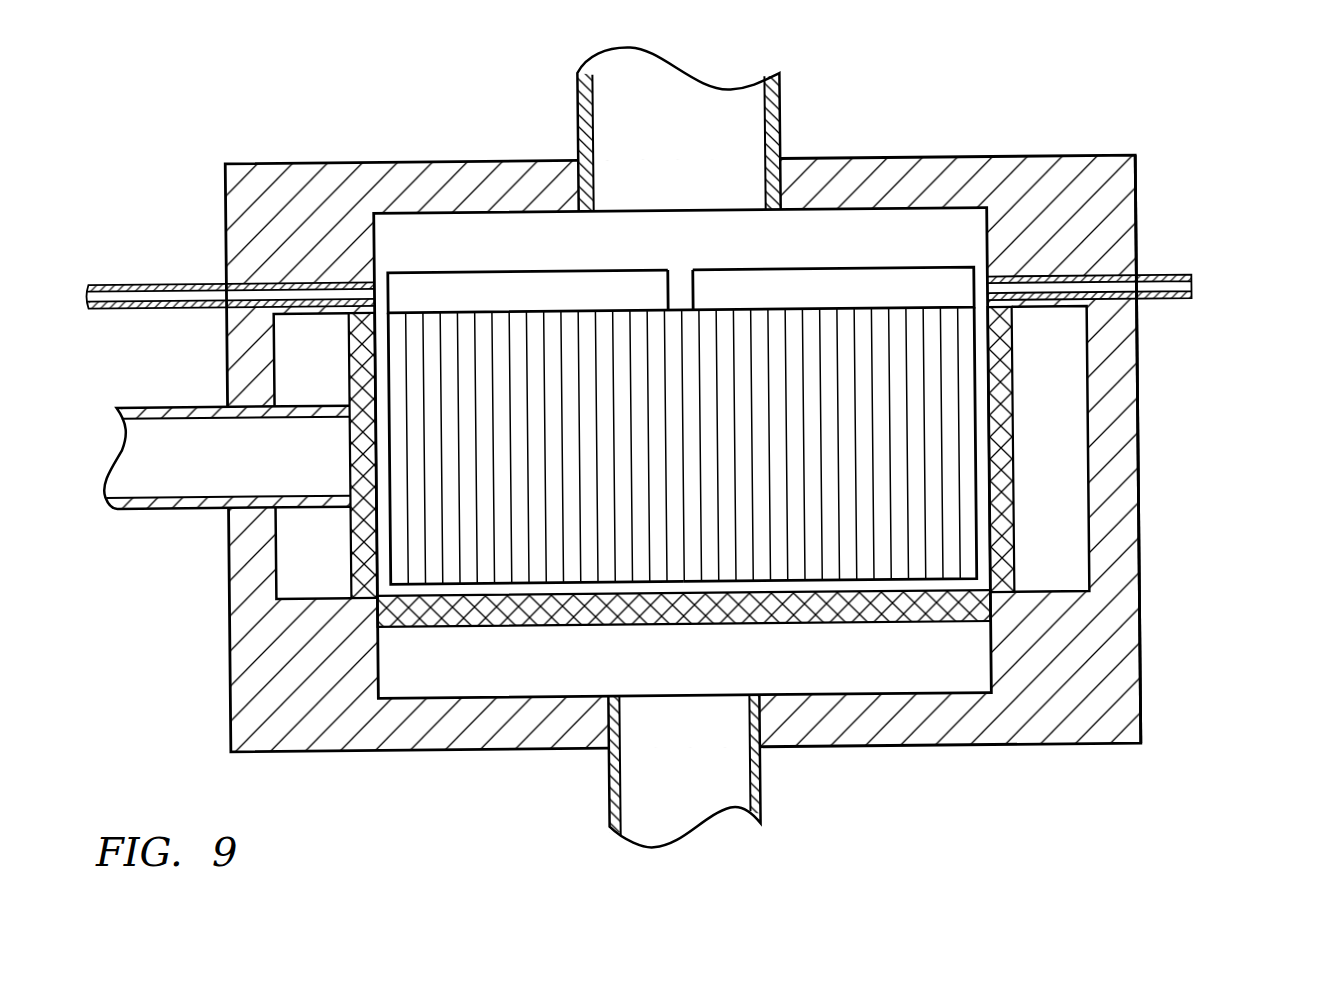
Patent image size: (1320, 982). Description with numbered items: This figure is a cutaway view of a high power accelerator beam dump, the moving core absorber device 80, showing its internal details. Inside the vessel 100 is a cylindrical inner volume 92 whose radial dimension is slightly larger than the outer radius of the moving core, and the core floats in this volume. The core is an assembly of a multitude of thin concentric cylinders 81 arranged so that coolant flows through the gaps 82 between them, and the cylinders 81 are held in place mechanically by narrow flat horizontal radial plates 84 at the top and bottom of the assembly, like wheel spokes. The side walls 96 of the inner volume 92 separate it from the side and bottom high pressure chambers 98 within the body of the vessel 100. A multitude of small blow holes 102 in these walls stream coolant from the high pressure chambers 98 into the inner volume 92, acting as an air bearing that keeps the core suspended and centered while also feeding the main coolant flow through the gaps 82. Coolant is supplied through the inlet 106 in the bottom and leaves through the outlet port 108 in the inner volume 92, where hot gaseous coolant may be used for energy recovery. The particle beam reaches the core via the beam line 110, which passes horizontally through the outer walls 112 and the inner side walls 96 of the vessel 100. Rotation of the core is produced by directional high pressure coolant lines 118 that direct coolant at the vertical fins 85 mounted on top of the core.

The moving core absorber device 80 is at (667, 454).
The concentric cylinders 81 is at (523, 311).
The gaps 82 is at (791, 323).
The radial plates 84 is at (400, 311).
The vertical fins 85 is at (711, 287).
The inner volume 92 is at (930, 224).
The side walls 96 is at (358, 547).
The high pressure chambers 98 is at (288, 543).
The vessel 100 is at (1128, 411).
The blow holes 102 is at (748, 610).
The inlet 106 is at (697, 797).
The outlet port 108 is at (725, 105).
The beam line 110 is at (132, 467).
The outer walls 112 is at (225, 663).
The directional high pressure coolant lines 118 is at (110, 292).